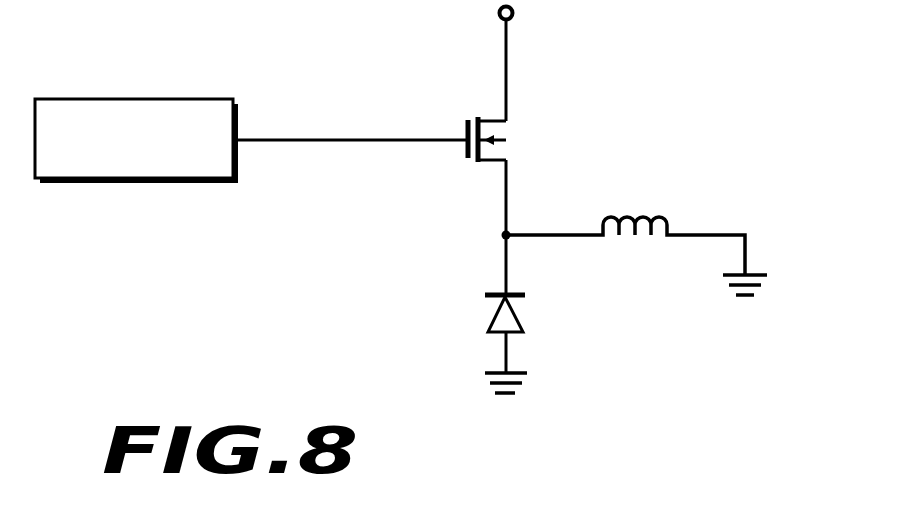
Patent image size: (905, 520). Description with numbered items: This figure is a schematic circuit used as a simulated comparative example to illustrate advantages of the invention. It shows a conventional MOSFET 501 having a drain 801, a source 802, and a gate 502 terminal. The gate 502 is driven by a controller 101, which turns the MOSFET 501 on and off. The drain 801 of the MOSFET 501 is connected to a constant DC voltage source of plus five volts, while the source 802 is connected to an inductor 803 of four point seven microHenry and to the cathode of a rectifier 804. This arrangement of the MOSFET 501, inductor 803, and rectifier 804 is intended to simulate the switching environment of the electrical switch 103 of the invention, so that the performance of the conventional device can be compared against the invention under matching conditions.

The controller 101 is at (124, 98).
The gate 502 is at (300, 138).
The electrical switch 103 is at (415, 196).
The conventional MOSFET 501 is at (464, 162).
The drain 801 is at (508, 75).
The source 802 is at (508, 197).
The inductor 803 is at (640, 216).
The rectifier 804 is at (520, 292).